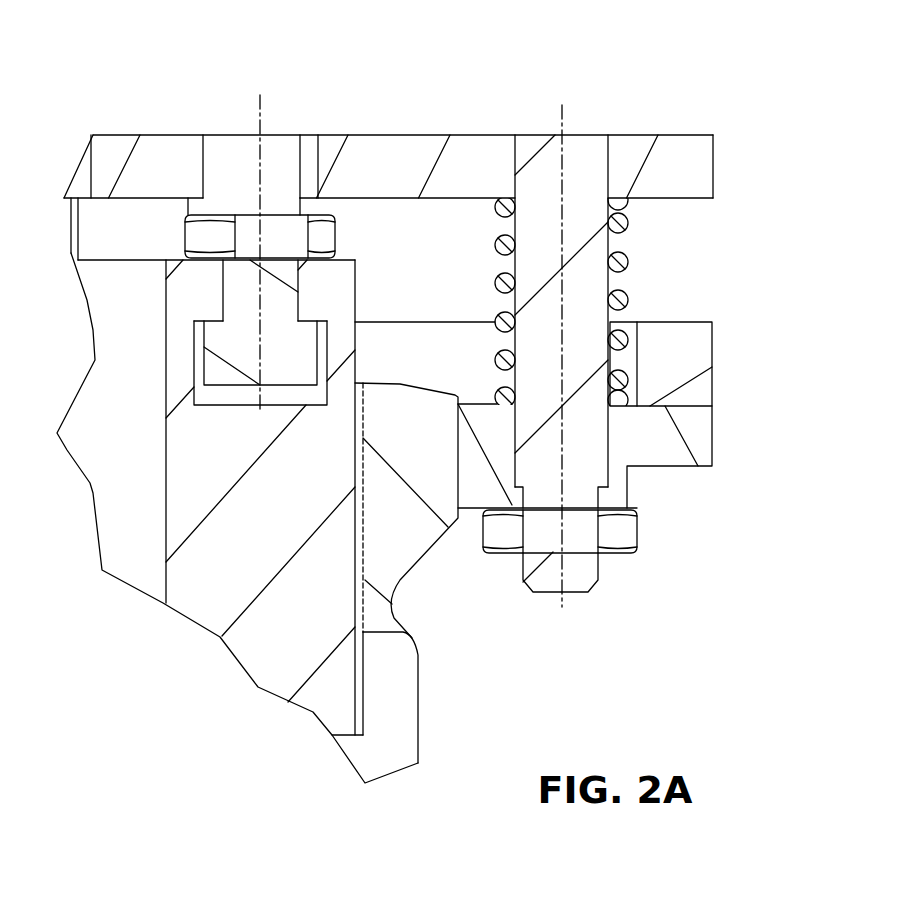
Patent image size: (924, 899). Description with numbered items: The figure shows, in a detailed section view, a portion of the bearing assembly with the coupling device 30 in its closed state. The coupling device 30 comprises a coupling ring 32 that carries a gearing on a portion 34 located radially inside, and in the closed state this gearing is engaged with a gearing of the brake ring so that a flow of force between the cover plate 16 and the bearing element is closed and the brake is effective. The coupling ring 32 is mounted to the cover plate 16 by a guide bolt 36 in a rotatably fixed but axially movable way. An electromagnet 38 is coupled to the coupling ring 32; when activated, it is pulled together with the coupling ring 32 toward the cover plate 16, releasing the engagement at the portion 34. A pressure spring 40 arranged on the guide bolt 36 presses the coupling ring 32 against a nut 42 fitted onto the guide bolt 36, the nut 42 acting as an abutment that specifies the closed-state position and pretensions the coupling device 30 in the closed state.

The cover plate 16 is at (385, 150).
The coupling device 30 is at (490, 403).
The coupling ring 32 is at (685, 462).
The portion 34 is at (459, 491).
The guide bolt 36 is at (558, 150).
The electromagnet 38 is at (705, 388).
The pressure spring 40 is at (625, 297).
The nut 42 is at (625, 537).